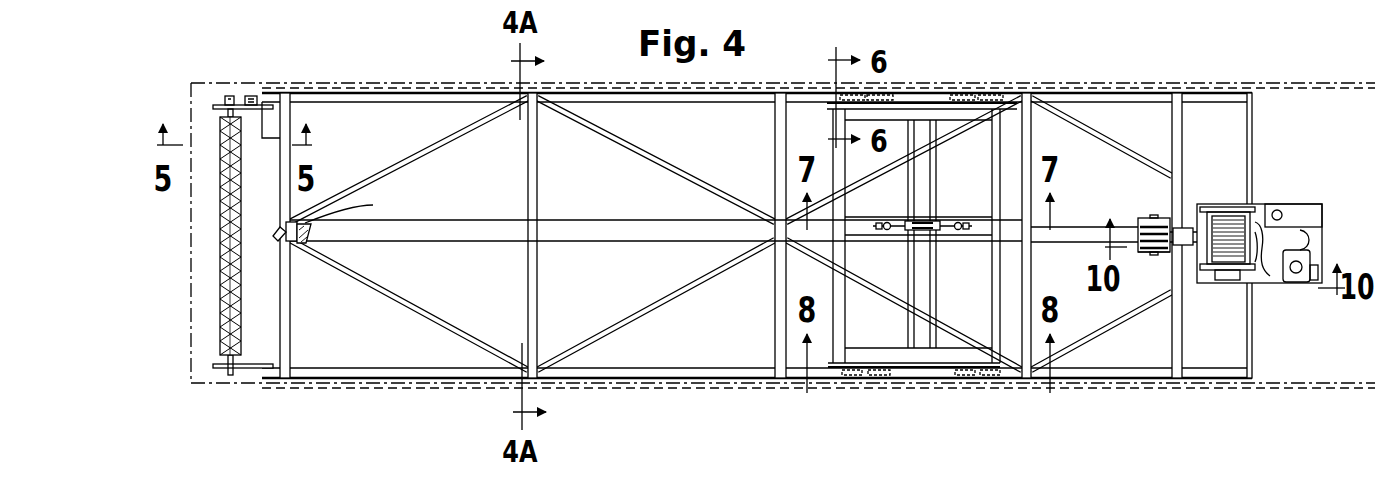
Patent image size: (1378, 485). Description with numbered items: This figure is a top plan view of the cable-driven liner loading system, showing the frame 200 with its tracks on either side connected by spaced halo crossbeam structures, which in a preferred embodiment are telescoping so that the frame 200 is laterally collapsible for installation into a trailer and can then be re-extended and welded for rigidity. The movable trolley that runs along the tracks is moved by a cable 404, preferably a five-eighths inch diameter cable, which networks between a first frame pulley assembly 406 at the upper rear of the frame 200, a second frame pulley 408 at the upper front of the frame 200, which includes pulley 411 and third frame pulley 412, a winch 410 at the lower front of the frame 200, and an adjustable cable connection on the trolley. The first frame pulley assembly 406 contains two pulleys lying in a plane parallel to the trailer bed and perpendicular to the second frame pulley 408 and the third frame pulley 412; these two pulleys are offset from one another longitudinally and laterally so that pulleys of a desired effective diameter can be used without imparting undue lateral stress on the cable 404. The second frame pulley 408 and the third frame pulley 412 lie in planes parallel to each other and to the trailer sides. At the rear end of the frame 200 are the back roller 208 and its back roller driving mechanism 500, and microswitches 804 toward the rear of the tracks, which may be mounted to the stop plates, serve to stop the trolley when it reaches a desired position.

The frame 200 is at (761, 243).
The back roller 208 is at (221, 298).
The cable 404 is at (476, 220).
The first frame pulley assembly 406 is at (313, 235).
The second frame pulley 408 is at (1163, 211).
The winch 410 is at (1217, 215).
The pulley 411 is at (1137, 222).
The third frame pulley 412 is at (1137, 251).
The back roller driving mechanism 500 is at (242, 93).
The microswitches 804 is at (314, 100).